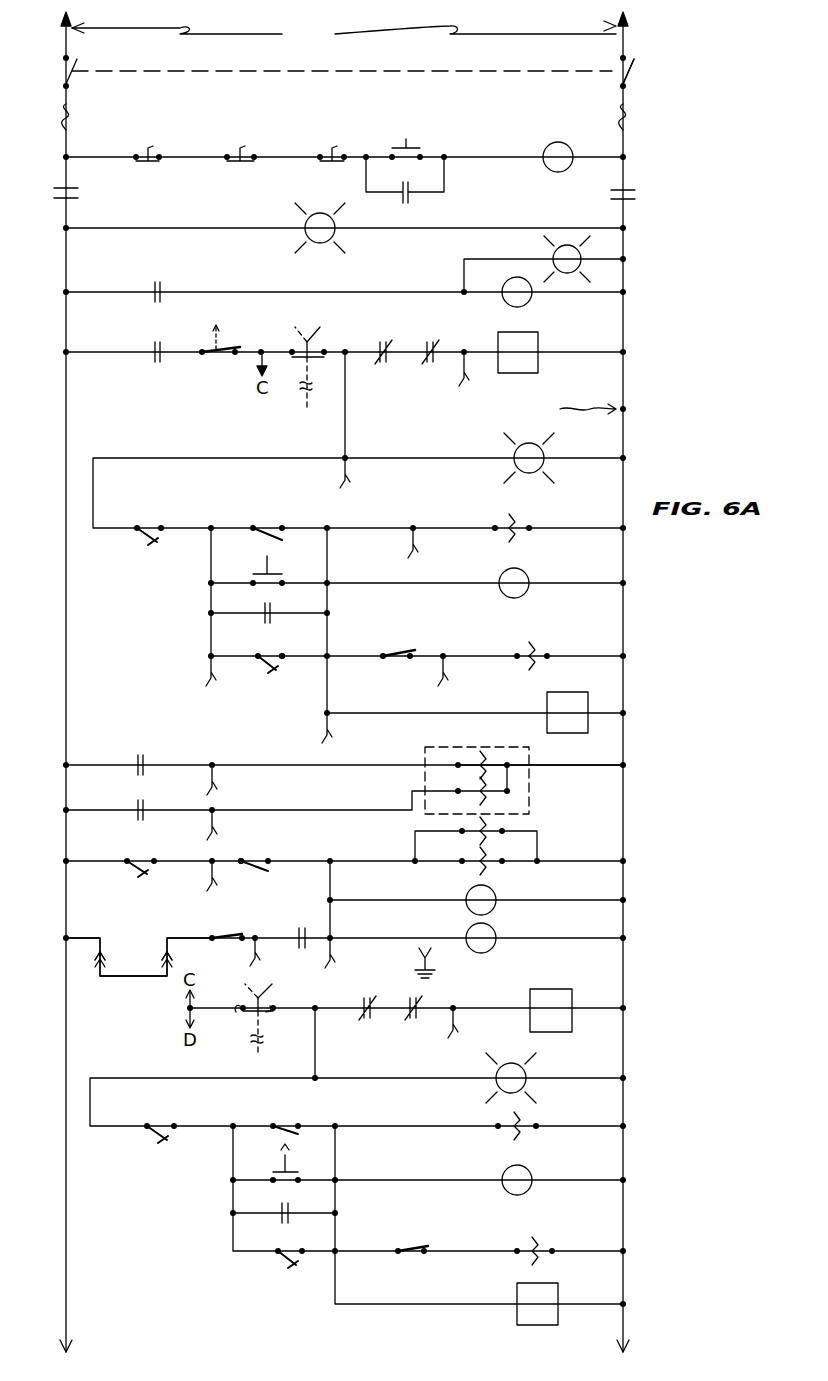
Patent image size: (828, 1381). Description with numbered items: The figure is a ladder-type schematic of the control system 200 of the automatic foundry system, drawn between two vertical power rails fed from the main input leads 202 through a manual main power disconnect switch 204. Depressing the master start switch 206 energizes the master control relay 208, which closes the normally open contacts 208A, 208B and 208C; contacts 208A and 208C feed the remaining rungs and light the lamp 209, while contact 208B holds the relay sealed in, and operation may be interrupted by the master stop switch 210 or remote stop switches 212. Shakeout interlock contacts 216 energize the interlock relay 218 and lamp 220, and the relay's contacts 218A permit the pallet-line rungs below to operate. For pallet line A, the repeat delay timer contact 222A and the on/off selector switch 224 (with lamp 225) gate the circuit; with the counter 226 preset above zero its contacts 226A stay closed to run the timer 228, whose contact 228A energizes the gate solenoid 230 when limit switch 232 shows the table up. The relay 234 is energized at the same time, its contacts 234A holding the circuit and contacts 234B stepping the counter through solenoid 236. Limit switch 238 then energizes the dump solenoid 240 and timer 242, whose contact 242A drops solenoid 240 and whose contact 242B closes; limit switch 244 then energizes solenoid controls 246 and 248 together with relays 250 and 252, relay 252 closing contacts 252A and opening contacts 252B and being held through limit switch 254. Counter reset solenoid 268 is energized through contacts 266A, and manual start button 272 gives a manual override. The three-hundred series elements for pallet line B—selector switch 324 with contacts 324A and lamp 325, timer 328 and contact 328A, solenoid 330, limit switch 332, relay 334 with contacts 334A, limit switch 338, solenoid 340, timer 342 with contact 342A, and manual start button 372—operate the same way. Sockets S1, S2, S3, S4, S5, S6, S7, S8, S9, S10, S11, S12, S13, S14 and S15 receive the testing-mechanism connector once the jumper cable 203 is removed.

The control system 200 is at (658, 245).
The main input leads 202 is at (344, 31).
The jumper cable 203 is at (132, 978).
The manual main power disconnect switch 204 is at (633, 72).
The master start switch 206 is at (69, 116).
The master control relay 208 is at (558, 142).
The relay contact 208A is at (78, 195).
The relay contact 208B is at (413, 198).
The relay contact 208C is at (632, 188).
The lamp 209 is at (306, 241).
The master stop switch 210 is at (336, 146).
The remote stop switches 212 is at (241, 146).
The relay contacts 216 is at (153, 284).
The interlock relay 218 is at (527, 304).
The relay contacts 218A is at (154, 344).
The lamp 220 is at (554, 260).
The switch contact 222A is at (200, 346).
The selector switch 224 is at (305, 322).
The lamp 225 is at (538, 463).
The counter 226 is at (530, 754).
The relay contacts 226A is at (388, 344).
The timer 228 is at (536, 364).
The switch contact 228A is at (262, 526).
The solenoid 230 is at (518, 519).
The limit switch 232 is at (148, 526).
The relay 234 is at (525, 575).
The relay contacts 234A is at (273, 622).
The relay contacts 234B is at (146, 764).
The solenoid 236 is at (500, 744).
The limit switch 238 is at (259, 655).
The solenoid 240 is at (529, 654).
The timer 242 is at (548, 704).
The switch contact 242A is at (398, 656).
The switch contact 242B is at (256, 861).
The limit switch 244 is at (156, 853).
The solenoid control 246 is at (496, 832).
The solenoid control 248 is at (503, 862).
The relay 250 is at (495, 896).
The relay 252 is at (490, 933).
The relay contacts 252A is at (312, 914).
The relay contacts 252B is at (433, 344).
The limit switch 254 is at (226, 934).
The relay contacts 266A is at (141, 808).
The counter reset solenoid 268 is at (508, 790).
The manual start button 272 is at (273, 570).
The selector switch 324 is at (256, 986).
The switch contacts 324A is at (262, 1012).
The lamp 325 is at (516, 1066).
The timer 328 is at (543, 991).
The switch contact 328A is at (272, 1124).
The solenoid 330 is at (518, 1124).
The limit switch 332 is at (150, 1124).
The relay 334 is at (525, 1173).
The relay contacts 334A is at (296, 1219).
The limit switch 338 is at (283, 1255).
The solenoid 340 is at (534, 1246).
The timer 342 is at (558, 1296).
The switch contact 342A is at (410, 1248).
The manual start button 372 is at (290, 1173).
The socket S1 is at (108, 950).
The socket S2 is at (551, 409).
The socket S3 is at (350, 478).
The socket S4 is at (470, 383).
The socket S5 is at (218, 681).
The socket S6 is at (414, 555).
The socket S7 is at (329, 738).
The socket S8 is at (447, 687).
The socket S9 is at (218, 789).
The socket S10 is at (222, 835).
The socket S11 is at (215, 880).
The socket S12 is at (328, 955).
The socket S13 is at (164, 956).
The socket S14 is at (254, 960).
The socket S15 is at (426, 961).